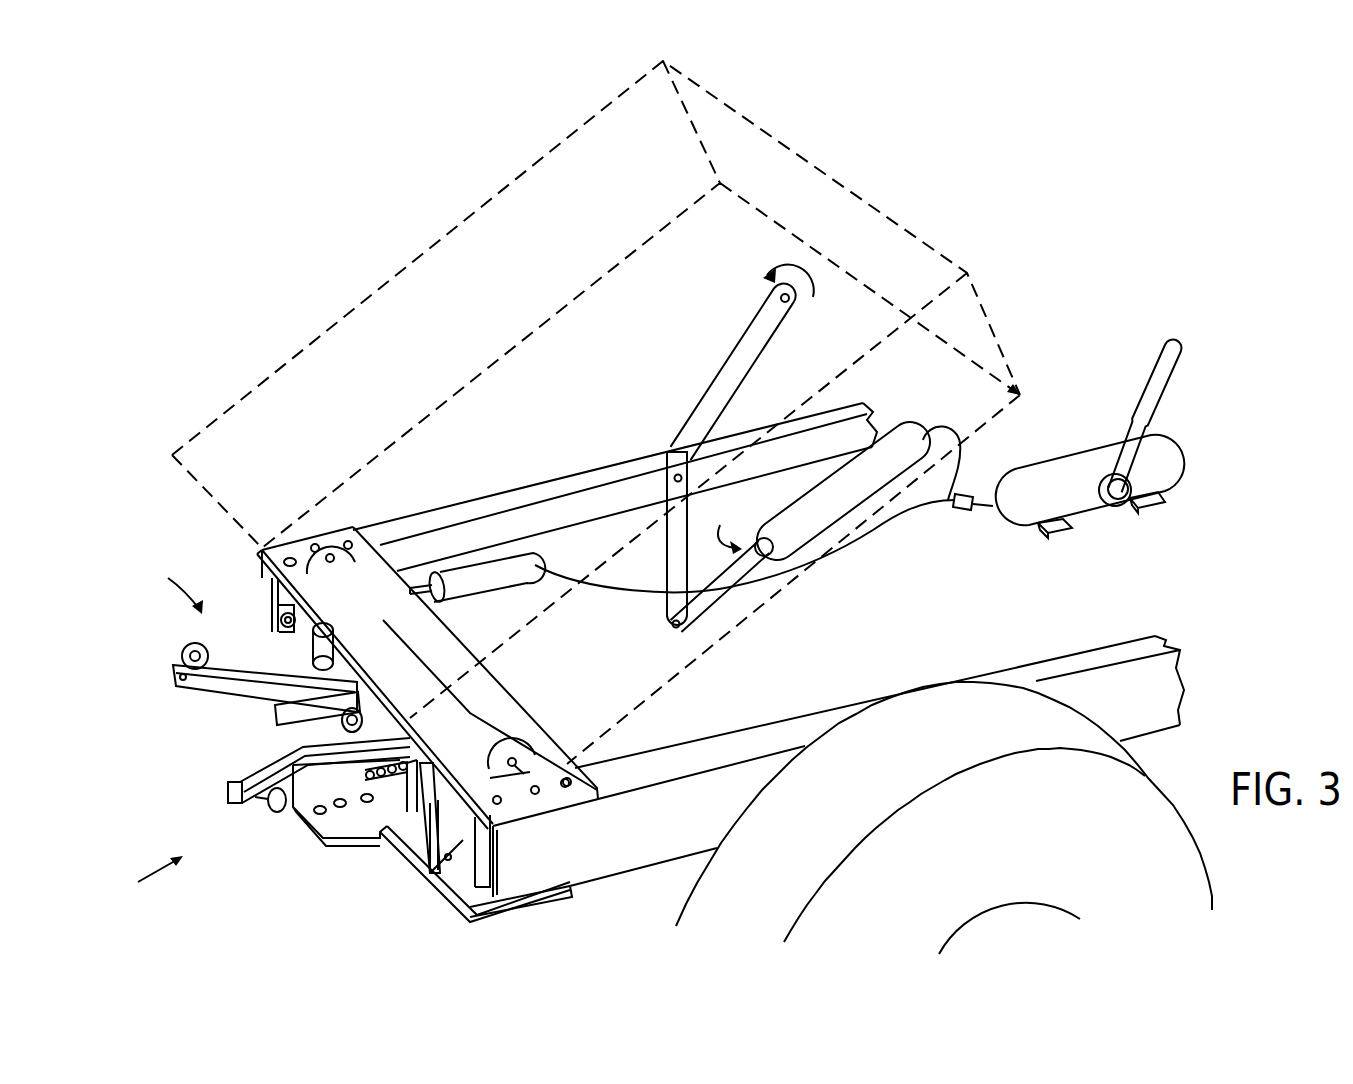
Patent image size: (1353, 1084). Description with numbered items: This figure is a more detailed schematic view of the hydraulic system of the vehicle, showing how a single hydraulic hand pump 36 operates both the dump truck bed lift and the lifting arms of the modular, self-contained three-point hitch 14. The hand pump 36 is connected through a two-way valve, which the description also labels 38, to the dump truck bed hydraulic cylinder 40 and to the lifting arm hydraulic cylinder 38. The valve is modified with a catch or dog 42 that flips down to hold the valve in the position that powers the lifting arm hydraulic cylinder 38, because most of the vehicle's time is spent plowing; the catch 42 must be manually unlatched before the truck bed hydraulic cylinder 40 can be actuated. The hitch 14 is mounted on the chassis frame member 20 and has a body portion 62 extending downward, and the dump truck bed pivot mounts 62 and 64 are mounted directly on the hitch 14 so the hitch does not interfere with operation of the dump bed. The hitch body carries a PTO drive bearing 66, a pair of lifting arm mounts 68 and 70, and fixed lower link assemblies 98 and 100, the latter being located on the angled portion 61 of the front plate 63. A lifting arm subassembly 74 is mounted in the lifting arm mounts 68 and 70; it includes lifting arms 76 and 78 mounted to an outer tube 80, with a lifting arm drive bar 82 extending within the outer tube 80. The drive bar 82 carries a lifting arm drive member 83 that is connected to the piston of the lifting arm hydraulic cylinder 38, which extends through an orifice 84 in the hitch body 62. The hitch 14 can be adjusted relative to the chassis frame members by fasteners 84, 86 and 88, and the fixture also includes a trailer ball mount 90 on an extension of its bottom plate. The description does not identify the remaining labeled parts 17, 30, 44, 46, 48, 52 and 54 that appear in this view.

The three-point hitch 14 is at (142, 877).
The vehicle frame member 17 is at (727, 745).
The chassis frame member 20 is at (590, 468).
The hydraulic line 30 is at (676, 560).
The hydraulic hand pump 36 is at (1068, 475).
The lifting arm hydraulic cylinder 38 is at (483, 570).
The dump truck bed hydraulic cylinder 40 is at (905, 445).
The catch or dog 42 is at (712, 612).
The direction of movement 44 is at (727, 526).
The lever arm 46 is at (745, 345).
The rotation direction 48 is at (792, 265).
The pivot 52 is at (677, 452).
The pivot pin 54 is at (790, 302).
The angled portion 61 is at (488, 196).
The body portion 62 is at (332, 560).
The front plate 63 is at (378, 562).
The dump truck bed pivot mount 64 is at (507, 748).
The PTO drive bearing 66 is at (370, 775).
The lifting arm mount 68 is at (447, 623).
The lifting arm mount 70 is at (470, 712).
The lifting arm subassembly 74 is at (171, 583).
The lifting arm 76 is at (222, 700).
The lifting arm 78 is at (250, 768).
The outer tube 80 is at (384, 706).
The lifting arm drive bar 82 is at (318, 623).
The lifting arm drive member 83 is at (277, 608).
The orifice 84 is at (307, 650).
The fastener 86 is at (537, 800).
The fastener 88 is at (500, 812).
The trailer ball mount 90 is at (325, 830).
The fixed lower link assembly 98 is at (410, 868).
The fixed lower link assembly 100 is at (290, 722).